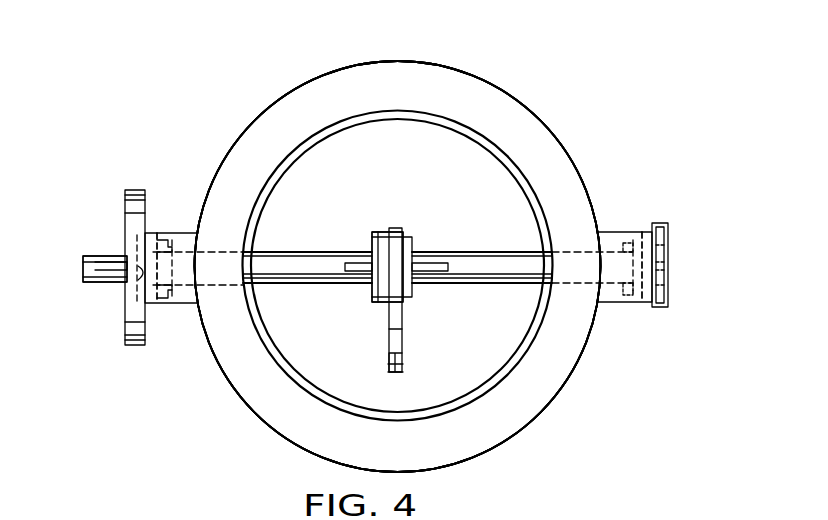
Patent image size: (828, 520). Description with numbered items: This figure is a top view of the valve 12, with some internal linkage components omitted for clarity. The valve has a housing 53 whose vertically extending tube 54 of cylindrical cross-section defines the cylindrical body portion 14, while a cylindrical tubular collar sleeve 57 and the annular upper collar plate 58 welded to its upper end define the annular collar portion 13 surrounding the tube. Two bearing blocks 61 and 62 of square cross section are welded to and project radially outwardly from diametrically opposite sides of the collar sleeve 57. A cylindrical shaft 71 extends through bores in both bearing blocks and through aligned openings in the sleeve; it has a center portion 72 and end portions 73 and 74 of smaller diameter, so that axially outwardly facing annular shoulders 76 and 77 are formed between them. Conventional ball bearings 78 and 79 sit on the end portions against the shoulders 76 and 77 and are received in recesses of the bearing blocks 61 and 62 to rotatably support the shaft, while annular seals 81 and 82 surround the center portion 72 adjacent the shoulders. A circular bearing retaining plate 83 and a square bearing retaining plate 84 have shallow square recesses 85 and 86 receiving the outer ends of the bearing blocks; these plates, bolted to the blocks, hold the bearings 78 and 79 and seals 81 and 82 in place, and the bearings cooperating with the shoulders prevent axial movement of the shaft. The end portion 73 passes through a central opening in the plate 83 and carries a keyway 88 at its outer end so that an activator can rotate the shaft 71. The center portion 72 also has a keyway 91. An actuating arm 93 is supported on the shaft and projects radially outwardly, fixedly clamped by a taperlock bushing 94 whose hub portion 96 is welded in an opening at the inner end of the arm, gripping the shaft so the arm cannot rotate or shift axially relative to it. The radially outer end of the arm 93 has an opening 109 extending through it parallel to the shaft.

The valve 12 is at (599, 137).
The annular collar portion 13 is at (537, 108).
The cylindrical body portion 14 is at (354, 132).
The housing 53 is at (499, 86).
The tube 54 is at (408, 120).
The collar sleeve 57 is at (462, 68).
The upper collar plate 58 is at (502, 415).
The bearing block 61 is at (188, 243).
The bearing block 62 is at (613, 240).
The shaft 71 is at (83, 252).
The center portion 72 is at (488, 260).
The end portion 73 is at (110, 252).
The end portion 74 is at (660, 260).
The shoulder 76 is at (155, 233).
The shoulder 77 is at (642, 232).
The ball bearing 78 is at (158, 305).
The ball bearing 79 is at (642, 305).
The seal 81 is at (170, 307).
The seal 82 is at (627, 303).
The circular bearing retaining plate 83 is at (137, 190).
The square bearing retaining plate 84 is at (668, 225).
The recess 85 is at (132, 290).
The recess 86 is at (660, 275).
The keyway 88 is at (93, 284).
The keyway 91 is at (443, 262).
The actuating arm 93 is at (403, 338).
The taperlock bushing 94 is at (372, 306).
The hub portion 96 is at (385, 232).
The opening 109 is at (405, 357).